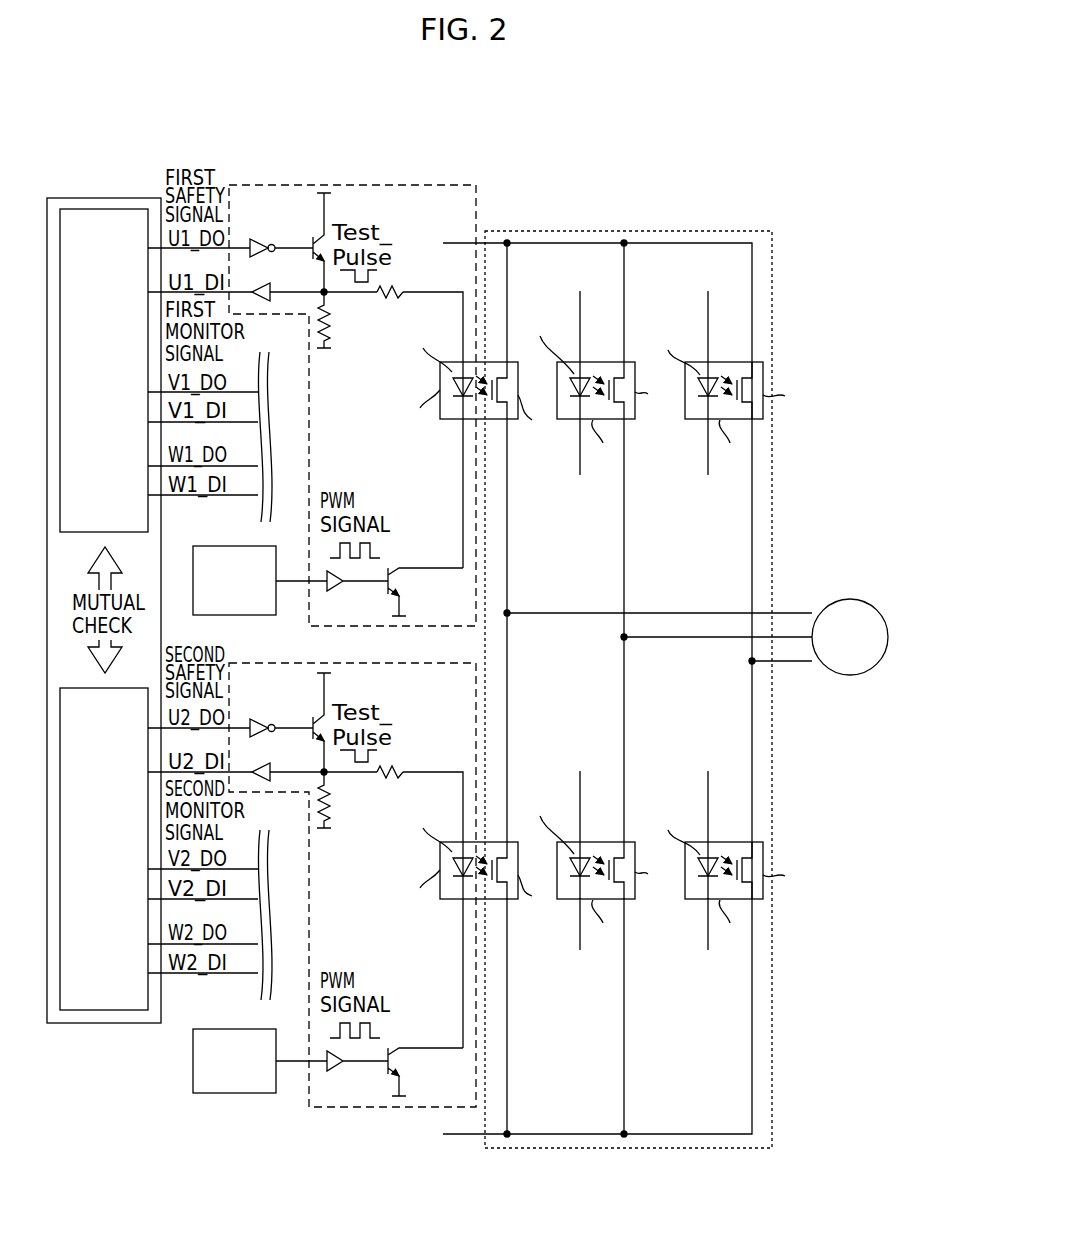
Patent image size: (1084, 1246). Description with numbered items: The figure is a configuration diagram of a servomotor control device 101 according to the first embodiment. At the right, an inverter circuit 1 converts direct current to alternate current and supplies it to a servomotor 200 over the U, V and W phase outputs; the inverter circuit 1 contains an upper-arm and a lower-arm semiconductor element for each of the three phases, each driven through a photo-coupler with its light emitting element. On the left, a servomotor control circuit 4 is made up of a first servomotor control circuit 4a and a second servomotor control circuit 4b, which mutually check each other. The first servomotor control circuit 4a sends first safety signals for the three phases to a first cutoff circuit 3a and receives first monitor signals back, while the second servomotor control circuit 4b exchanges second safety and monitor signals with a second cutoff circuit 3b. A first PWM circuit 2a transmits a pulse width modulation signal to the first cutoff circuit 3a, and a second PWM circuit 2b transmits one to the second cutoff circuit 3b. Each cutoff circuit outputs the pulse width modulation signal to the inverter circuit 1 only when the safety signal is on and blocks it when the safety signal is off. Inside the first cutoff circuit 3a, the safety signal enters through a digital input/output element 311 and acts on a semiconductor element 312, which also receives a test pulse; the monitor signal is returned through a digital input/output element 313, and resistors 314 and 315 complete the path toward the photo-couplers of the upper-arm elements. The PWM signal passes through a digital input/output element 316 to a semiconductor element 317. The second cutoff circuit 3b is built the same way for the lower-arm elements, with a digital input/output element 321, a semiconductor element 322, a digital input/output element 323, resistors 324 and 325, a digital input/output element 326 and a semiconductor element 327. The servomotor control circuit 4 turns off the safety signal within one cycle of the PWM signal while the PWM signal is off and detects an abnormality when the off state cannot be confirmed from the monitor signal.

The servomotor control circuit 4 is at (78, 198).
The first servomotor control circuit 4a is at (103, 209).
The second servomotor control circuit 4b is at (117, 1024).
The first PWM circuit 2a is at (215, 546).
The second PWM circuit 2b is at (237, 1093).
The first cutoff circuit 3a is at (297, 185).
The second cutoff circuit 3b is at (250, 662).
The servomotor control device 101 is at (491, 150).
The inverter circuit 1 is at (688, 231).
The servomotor 200 is at (852, 598).
The digital input/output element 311 is at (262, 238).
The semiconductor element 312 is at (311, 242).
The digital input/output element 313 is at (266, 285).
The resistor 314 is at (328, 328).
The resistor 315 is at (402, 288).
The digital input/output element 316 is at (340, 592).
The semiconductor element 317 is at (400, 583).
The digital input/output element 321 is at (276, 702).
The semiconductor element 322 is at (304, 722).
The digital input/output element 323 is at (314, 762).
The resistor 324 is at (343, 805).
The resistor 325 is at (416, 754).
The digital input/output element 326 is at (332, 1079).
The semiconductor element 327 is at (425, 1072).